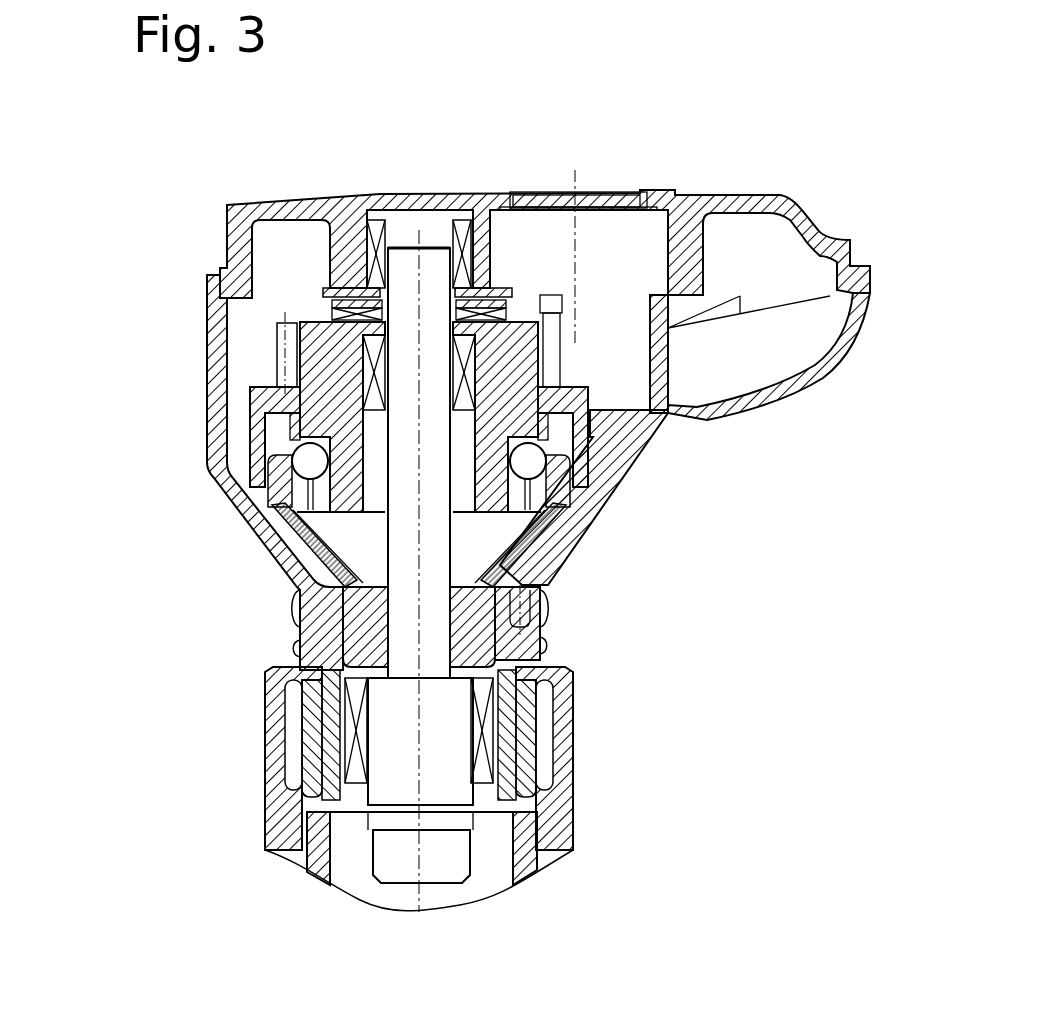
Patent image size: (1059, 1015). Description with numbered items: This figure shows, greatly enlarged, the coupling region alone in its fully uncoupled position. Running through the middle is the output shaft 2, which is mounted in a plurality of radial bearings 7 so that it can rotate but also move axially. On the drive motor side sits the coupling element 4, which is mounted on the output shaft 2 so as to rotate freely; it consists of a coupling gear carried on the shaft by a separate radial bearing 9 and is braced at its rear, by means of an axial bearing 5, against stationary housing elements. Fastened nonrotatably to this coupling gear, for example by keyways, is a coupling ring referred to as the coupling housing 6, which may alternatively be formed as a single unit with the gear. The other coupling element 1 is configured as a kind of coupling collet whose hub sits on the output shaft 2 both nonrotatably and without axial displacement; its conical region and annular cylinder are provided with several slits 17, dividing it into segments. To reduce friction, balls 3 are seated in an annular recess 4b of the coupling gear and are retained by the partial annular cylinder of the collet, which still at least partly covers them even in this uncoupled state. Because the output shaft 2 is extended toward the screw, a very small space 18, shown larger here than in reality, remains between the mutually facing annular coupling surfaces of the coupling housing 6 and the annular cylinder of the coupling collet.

The coupling element 1 is at (290, 510).
The output shaft 2 is at (312, 624).
The balls 3 is at (600, 513).
The coupling element 4 is at (297, 360).
The annular recess 4b is at (312, 518).
The axial bearing 5 is at (255, 290).
The coupling housing 6 is at (600, 415).
The radial bearings 7 is at (483, 240).
The radial bearing 9 is at (352, 377).
The slits 17 is at (297, 595).
The space 18 is at (250, 475).